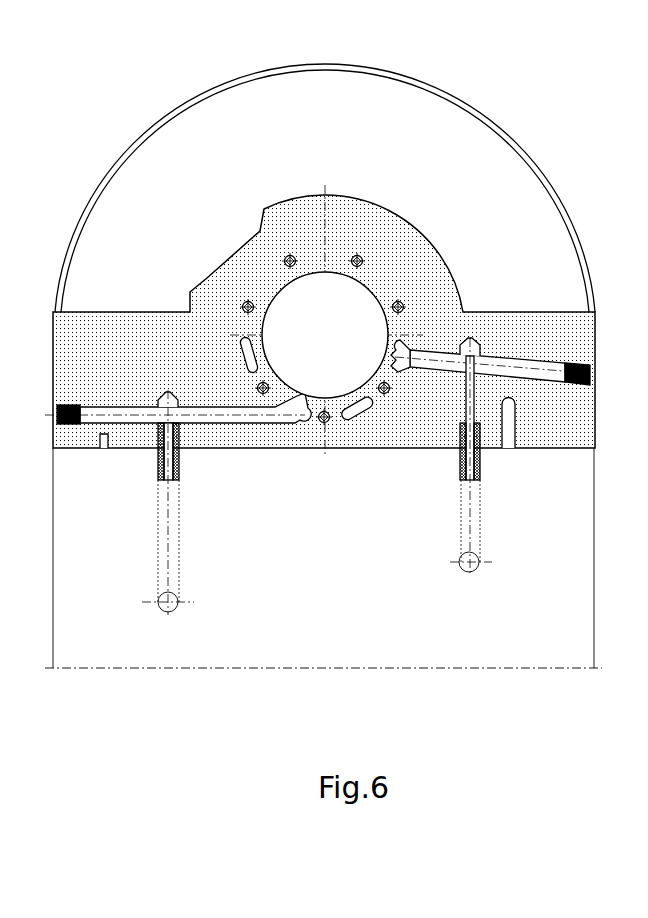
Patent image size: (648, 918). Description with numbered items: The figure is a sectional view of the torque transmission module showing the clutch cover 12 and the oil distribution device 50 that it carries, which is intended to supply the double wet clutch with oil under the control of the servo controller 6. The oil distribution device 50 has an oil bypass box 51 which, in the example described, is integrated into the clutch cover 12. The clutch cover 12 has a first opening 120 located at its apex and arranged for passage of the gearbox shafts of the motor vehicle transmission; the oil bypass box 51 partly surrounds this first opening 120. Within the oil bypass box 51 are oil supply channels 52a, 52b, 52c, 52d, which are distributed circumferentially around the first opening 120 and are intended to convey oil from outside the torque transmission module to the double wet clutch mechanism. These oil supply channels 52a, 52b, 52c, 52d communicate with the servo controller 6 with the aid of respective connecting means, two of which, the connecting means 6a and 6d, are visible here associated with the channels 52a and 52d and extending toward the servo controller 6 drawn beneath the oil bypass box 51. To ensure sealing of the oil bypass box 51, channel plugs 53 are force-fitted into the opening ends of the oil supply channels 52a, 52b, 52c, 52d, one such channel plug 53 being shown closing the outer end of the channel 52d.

The clutch cover 12 is at (462, 98).
The oil bypass box 51 is at (557, 333).
The oil supply channel 52a is at (112, 410).
The oil supply channel 52b is at (243, 352).
The oil supply channel 52c is at (355, 412).
The oil supply channel 52d is at (552, 362).
The channel plug 53 is at (590, 366).
The first opening 120 is at (312, 375).
The servo controller 6 is at (119, 668).
The connecting means 6a is at (182, 463).
The connecting means 6d is at (480, 462).
The oil distribution device 50 is at (558, 453).